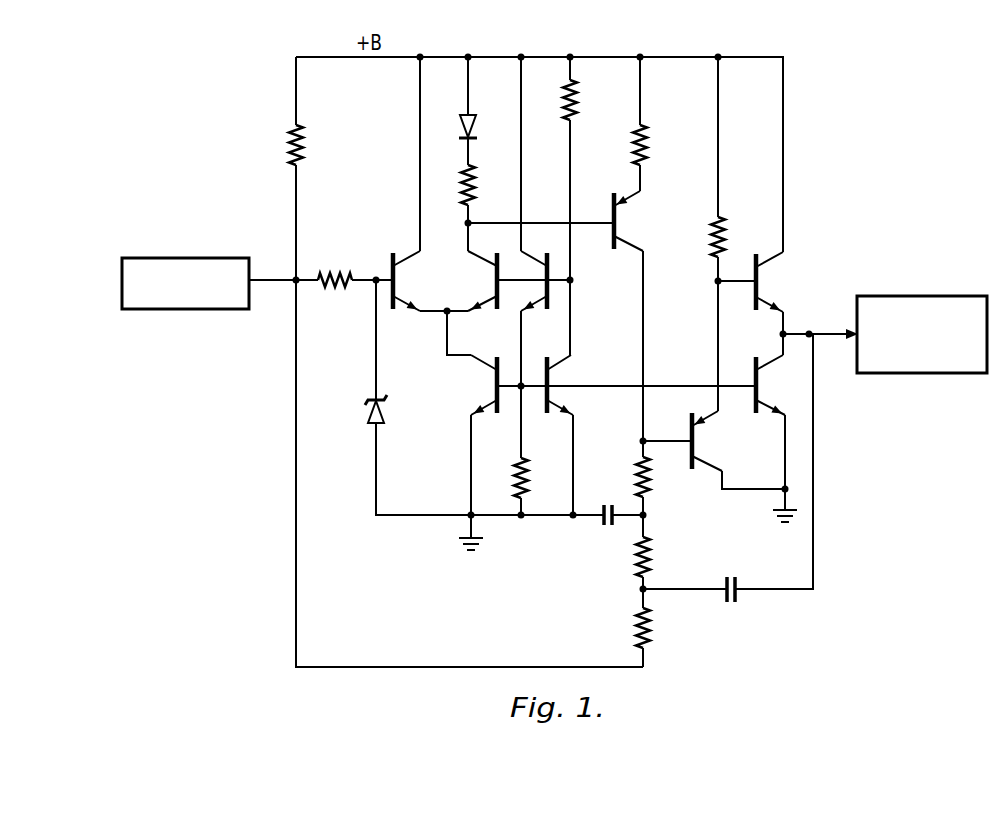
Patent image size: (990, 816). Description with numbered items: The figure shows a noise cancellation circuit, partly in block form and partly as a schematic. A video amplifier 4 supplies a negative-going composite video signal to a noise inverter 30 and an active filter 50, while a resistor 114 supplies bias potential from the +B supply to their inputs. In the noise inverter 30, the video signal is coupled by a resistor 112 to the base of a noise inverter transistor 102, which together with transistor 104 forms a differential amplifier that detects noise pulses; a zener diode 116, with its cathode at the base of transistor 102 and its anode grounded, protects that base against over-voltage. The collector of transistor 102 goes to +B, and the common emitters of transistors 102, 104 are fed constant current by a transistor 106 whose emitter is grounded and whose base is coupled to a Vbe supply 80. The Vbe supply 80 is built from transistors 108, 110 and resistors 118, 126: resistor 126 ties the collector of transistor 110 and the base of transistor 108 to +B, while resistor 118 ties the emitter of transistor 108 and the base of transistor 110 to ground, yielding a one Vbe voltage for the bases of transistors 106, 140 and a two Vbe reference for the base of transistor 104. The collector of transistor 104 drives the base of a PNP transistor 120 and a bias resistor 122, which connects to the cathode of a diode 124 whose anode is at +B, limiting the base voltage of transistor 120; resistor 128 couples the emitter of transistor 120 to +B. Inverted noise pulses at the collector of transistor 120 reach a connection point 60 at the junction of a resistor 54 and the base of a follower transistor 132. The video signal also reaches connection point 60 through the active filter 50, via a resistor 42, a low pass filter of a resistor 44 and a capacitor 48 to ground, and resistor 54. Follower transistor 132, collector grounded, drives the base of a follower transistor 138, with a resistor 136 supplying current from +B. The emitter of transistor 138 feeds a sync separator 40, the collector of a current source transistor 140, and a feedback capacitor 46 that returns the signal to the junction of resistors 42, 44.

The video amplifier 4 is at (188, 258).
The noise inverter 30 is at (460, 243).
The sync separator 40 is at (921, 296).
The resistor 42 is at (634, 634).
The resistor 44 is at (652, 554).
The feedback capacitor 46 is at (737, 583).
The capacitor 48 is at (602, 524).
The active filter 50 is at (700, 533).
The resistor 54 is at (637, 469).
The connection point 60 is at (641, 441).
The Vbe supply 80 is at (562, 346).
The noise inverter transistor 102 is at (396, 287).
The noise inverter transistor 104 is at (494, 287).
The transistor 106 is at (494, 380).
The transistor 108 is at (551, 301).
The transistor 110 is at (551, 376).
The resistor 112 is at (334, 273).
The resistor 114 is at (289, 145).
The zener diode 116 is at (372, 421).
The resistor 118 is at (532, 479).
The transistor 120 is at (617, 229).
The bias resistor 122 is at (461, 180).
The diode 124 is at (472, 126).
The resistor 126 is at (583, 98).
The resistor 128 is at (649, 140).
The follower transistor 132 is at (718, 441).
The resistor 136 is at (711, 238).
The follower transistor 138 is at (760, 288).
The current source transistor 140 is at (760, 392).